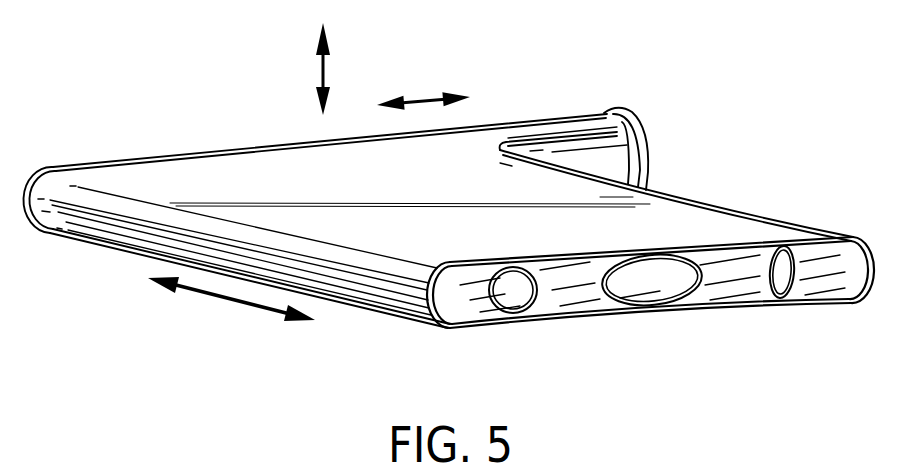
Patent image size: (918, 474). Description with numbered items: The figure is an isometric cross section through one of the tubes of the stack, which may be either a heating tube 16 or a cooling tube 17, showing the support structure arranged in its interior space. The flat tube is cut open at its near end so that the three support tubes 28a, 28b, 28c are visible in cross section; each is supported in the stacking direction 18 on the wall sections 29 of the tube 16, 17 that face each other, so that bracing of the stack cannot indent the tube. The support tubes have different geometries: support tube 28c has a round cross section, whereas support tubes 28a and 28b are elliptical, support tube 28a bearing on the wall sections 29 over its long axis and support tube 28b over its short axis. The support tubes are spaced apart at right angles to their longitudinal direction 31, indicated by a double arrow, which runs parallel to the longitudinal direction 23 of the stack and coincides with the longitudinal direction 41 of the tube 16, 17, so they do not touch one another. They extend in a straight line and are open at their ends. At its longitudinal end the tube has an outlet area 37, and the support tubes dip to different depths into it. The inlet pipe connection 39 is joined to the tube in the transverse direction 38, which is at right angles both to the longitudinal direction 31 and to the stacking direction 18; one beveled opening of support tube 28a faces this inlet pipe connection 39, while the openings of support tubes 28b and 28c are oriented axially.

The heating tube 16 is at (438, 198).
The cooling tube 17 is at (208, 116).
The stacking direction 18 is at (322, 68).
The transverse direction of the tube 38 is at (422, 96).
The inlet pipe connection 39 is at (560, 118).
The wall sections 29 is at (716, 244).
The outlet area 37 is at (843, 247).
The support tube 28a is at (798, 289).
The support tube 28b is at (614, 305).
The support tube 28c is at (546, 309).
The longitudinal direction of the stack 23 is at (245, 317).
The longitudinal direction of the tube 31 is at (245, 317).
The longitudinal direction of the tube 41 is at (220, 298).